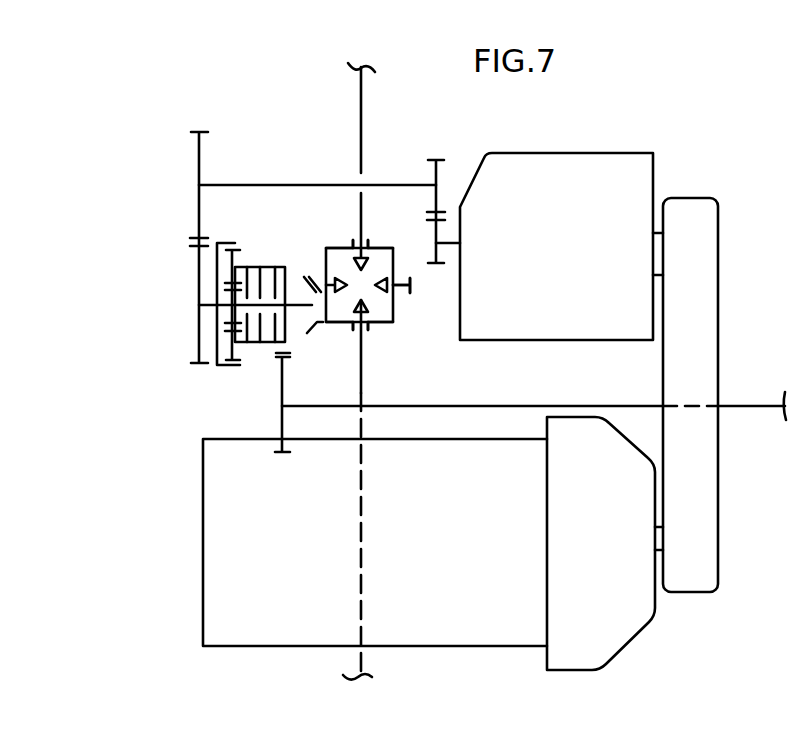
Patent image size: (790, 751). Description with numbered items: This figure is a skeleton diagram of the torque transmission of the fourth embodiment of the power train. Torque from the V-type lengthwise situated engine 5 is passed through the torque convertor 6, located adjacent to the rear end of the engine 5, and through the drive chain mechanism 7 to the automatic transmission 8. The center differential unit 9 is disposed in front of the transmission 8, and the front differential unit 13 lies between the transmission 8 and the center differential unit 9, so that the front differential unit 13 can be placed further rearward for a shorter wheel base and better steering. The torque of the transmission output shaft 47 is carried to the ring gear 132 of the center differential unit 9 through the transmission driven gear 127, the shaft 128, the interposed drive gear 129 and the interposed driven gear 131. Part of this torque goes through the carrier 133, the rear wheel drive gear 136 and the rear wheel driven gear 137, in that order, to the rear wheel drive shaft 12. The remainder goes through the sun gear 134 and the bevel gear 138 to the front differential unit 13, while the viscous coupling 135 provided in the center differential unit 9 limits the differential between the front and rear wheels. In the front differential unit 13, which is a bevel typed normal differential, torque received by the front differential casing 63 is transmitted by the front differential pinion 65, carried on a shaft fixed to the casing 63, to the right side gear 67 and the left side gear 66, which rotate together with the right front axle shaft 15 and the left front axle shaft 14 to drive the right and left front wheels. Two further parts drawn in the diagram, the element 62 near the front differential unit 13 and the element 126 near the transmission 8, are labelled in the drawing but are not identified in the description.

The engine 5 is at (204, 646).
The torque convertor 6 is at (612, 658).
The drive chain mechanism 7 is at (719, 293).
The automatic transmission 8 is at (653, 153).
The center differential unit 9 is at (225, 206).
The rear wheel drive shaft 12 is at (758, 408).
The front differential unit 13 is at (402, 335).
The left front axle shaft 14 is at (362, 648).
The right front axle shaft 15 is at (362, 102).
The transmission output shaft 47 is at (448, 240).
The gear unit tab 62 is at (411, 290).
The front differential casing 63 is at (378, 330).
The front differential pinion 65 is at (330, 250).
The left side gear 66 is at (348, 330).
The right side gear 67 is at (370, 248).
The bearing 126 is at (440, 265).
The transmission driven gear 127 is at (440, 158).
The shaft 128 is at (272, 185).
The interposed drive gear 129 is at (199, 130).
The interposed driven gear 131 is at (198, 366).
The ring gear 132 is at (228, 370).
The carrier 133 is at (224, 333).
The sun gear 134 is at (228, 297).
The viscous coupling 135 is at (263, 353).
The rear wheel drive gear 136 is at (290, 265).
The rear wheel driven gear 137 is at (270, 437).
The bevel gear 138 is at (312, 338).